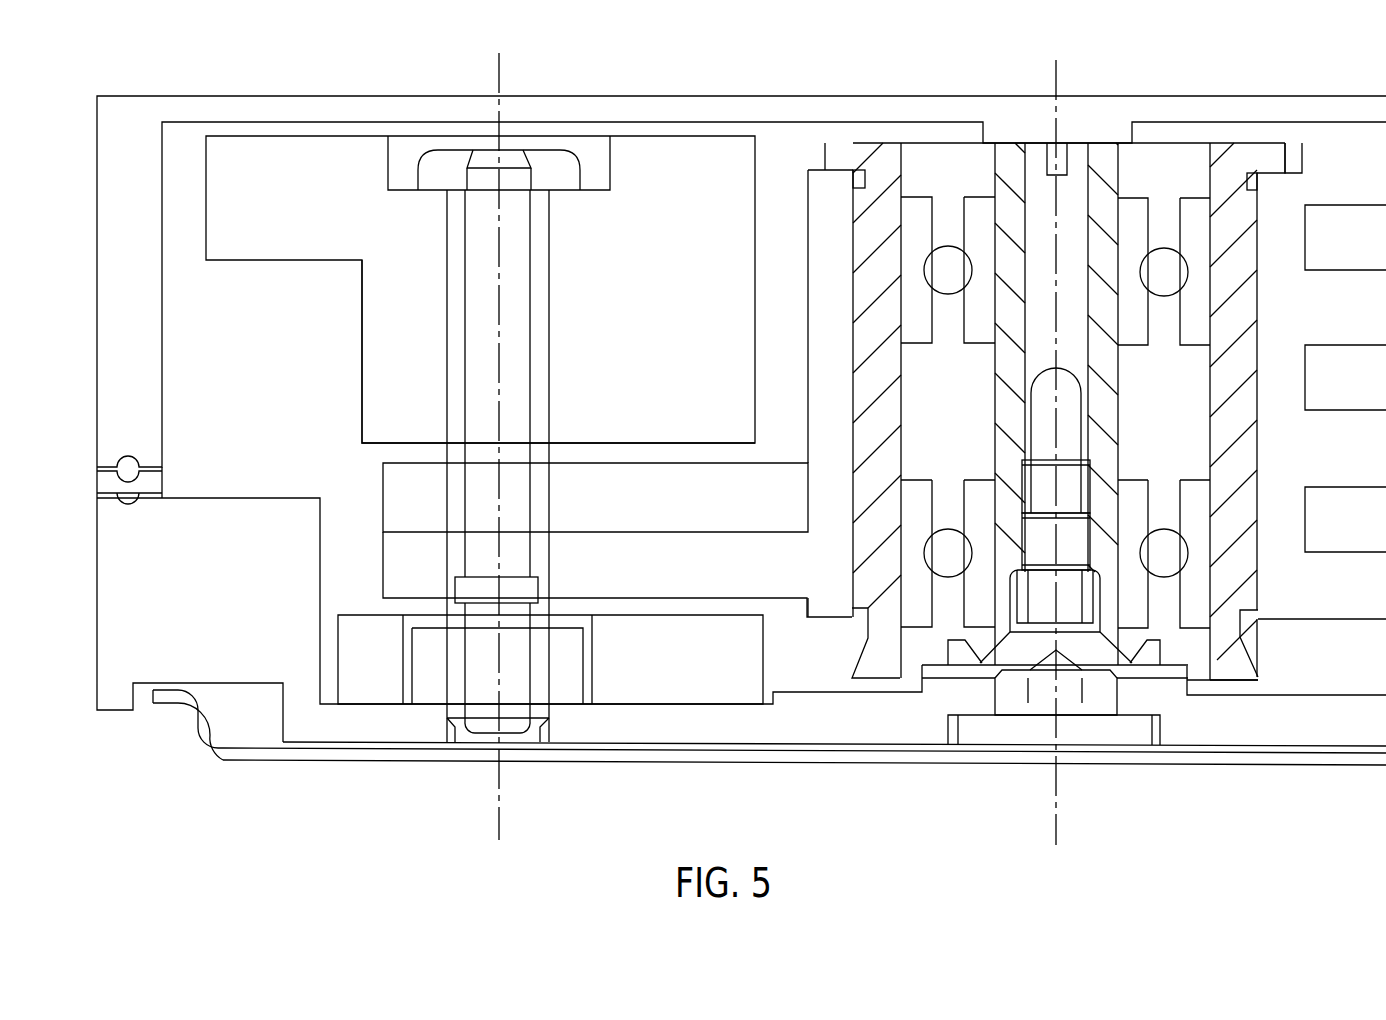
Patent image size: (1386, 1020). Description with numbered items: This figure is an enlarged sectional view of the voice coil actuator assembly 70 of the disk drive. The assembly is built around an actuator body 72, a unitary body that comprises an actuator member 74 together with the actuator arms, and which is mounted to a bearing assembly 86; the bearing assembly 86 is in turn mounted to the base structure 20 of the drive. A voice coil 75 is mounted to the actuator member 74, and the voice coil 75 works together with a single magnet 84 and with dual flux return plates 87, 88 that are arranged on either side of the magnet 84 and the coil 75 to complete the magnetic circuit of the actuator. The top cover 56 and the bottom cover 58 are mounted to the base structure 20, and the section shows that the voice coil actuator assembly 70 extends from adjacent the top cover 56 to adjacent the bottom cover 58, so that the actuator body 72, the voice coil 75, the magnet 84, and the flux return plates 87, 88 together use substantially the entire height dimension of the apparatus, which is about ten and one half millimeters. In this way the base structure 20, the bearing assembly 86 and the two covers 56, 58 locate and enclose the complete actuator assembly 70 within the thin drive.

The base structure 20 is at (832, 678).
The top cover 56 is at (320, 95).
The bottom cover 58 is at (548, 764).
The voice coil actuator assembly 70 is at (676, 82).
The actuator body 72 is at (787, 598).
The actuator member 74 is at (677, 580).
The voice coil 75 is at (677, 520).
The single magnet 84 is at (371, 355).
The bearing assembly 86 is at (940, 166).
The flux return plate 87 is at (691, 681).
The flux return plate 88 is at (302, 210).